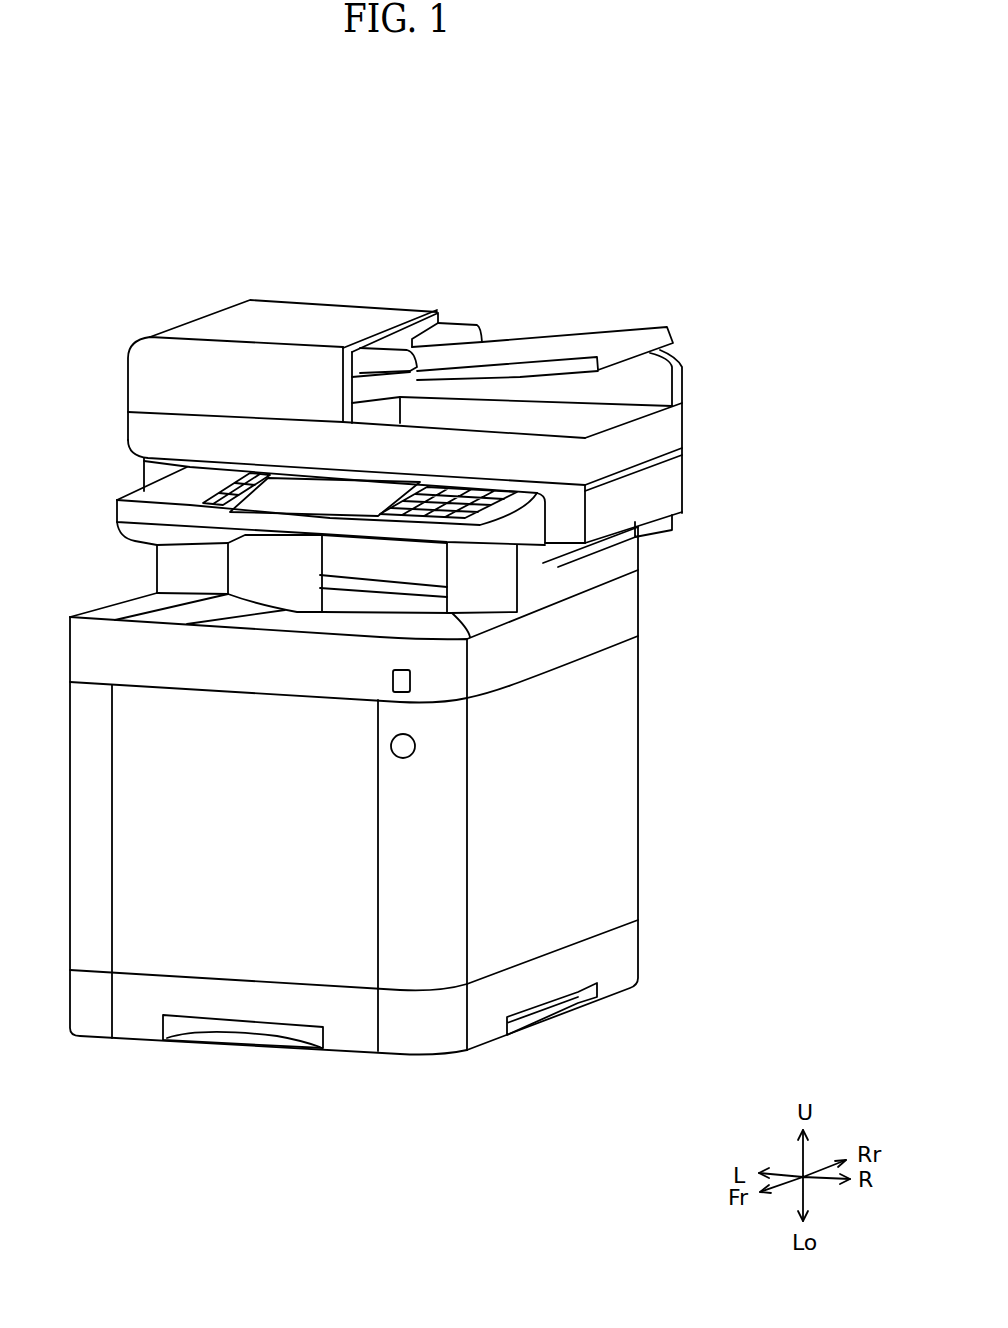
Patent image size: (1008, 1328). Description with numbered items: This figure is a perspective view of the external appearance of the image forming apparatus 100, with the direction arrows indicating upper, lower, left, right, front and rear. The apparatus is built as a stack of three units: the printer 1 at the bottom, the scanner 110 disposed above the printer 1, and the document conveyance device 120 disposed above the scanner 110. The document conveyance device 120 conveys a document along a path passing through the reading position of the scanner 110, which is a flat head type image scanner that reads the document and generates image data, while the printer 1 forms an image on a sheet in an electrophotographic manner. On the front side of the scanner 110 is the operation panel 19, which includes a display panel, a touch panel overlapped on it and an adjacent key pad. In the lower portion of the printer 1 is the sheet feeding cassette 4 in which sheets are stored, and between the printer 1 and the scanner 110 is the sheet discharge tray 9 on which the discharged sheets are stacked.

The image forming apparatus 100 is at (466, 236).
The document conveyance device 120 is at (704, 362).
The scanner 110 is at (704, 480).
The operation panel 19 is at (117, 510).
The sheet discharge tray 9 is at (293, 623).
The printer 1 is at (666, 578).
The sheet feeding cassette 4 is at (148, 1027).